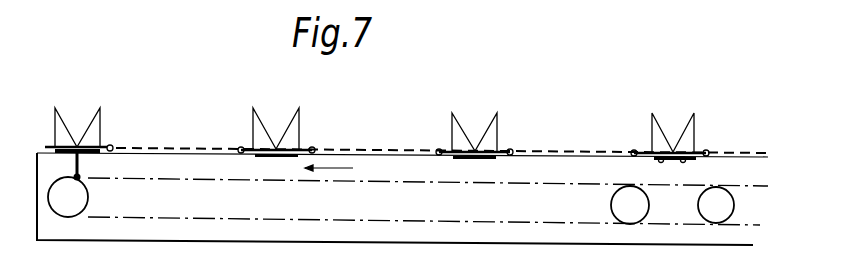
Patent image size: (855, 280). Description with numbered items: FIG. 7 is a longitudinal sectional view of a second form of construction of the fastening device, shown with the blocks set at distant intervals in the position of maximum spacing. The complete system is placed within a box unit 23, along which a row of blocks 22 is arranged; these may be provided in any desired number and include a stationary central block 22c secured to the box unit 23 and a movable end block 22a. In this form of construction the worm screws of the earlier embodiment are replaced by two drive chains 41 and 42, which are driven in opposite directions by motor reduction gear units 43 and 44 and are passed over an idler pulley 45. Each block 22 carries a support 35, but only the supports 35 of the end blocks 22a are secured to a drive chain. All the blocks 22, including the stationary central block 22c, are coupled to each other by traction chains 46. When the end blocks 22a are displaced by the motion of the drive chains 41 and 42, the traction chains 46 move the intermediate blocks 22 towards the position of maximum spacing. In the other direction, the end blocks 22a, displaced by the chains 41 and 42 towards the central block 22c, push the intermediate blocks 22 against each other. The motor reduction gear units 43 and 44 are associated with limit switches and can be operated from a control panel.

The block 22 is at (293, 135).
The end block 22a is at (58, 132).
The stationary central block 22c is at (688, 135).
The box unit 23 is at (128, 241).
The support 35 is at (80, 165).
The drive chain 41 is at (285, 222).
The drive chain 42 is at (740, 226).
The motor reduction gear unit 43 is at (630, 212).
The motor reduction gear unit 44 is at (707, 213).
The idler pulley 45 is at (66, 210).
The traction chain 46 is at (442, 146).